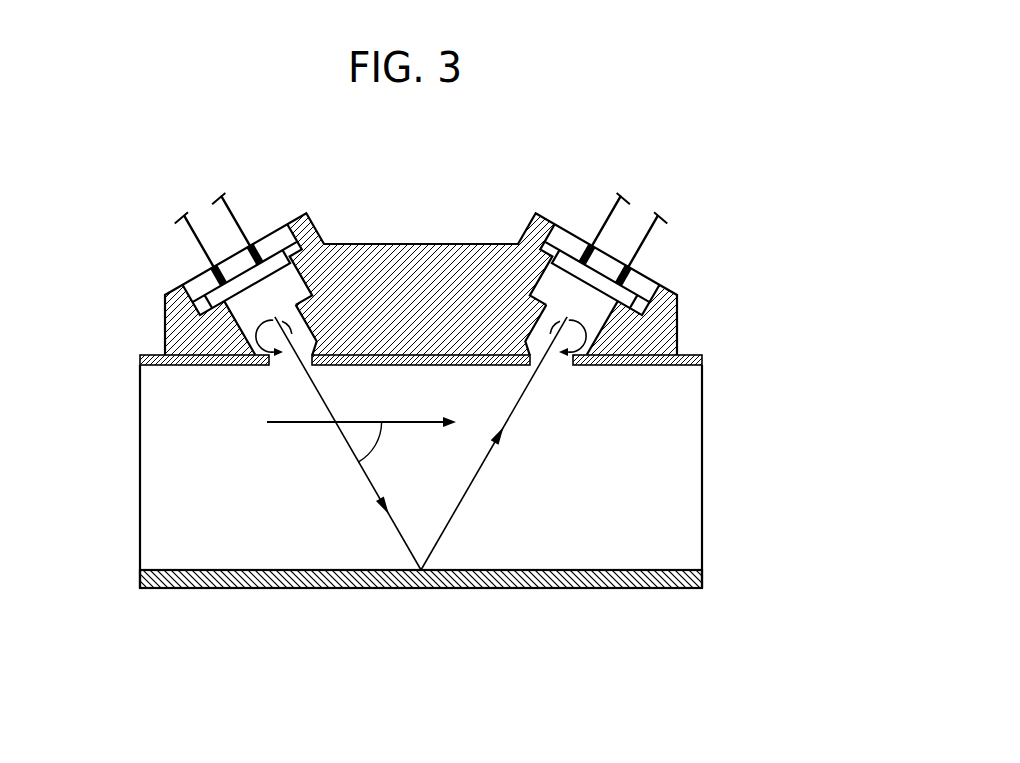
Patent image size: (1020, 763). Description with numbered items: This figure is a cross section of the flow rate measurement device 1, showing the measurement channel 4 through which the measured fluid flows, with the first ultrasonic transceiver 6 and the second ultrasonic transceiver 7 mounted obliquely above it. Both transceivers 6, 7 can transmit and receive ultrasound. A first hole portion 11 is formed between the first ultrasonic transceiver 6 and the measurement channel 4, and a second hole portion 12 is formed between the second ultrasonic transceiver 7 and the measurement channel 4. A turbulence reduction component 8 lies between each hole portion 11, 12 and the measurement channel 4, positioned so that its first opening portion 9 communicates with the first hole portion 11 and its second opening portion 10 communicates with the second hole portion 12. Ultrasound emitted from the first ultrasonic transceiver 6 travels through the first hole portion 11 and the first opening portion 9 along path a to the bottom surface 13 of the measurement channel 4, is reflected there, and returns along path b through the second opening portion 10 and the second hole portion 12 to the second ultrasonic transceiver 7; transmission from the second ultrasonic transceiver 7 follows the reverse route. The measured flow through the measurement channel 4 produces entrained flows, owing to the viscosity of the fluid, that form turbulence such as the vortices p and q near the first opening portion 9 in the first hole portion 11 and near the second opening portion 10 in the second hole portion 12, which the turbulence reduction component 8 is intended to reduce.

The flow rate measurement device 1 is at (512, 612).
The measurement channel 4 is at (252, 533).
The first ultrasonic transceiver 6 is at (210, 270).
The second ultrasonic transceiver 7 is at (633, 272).
The turbulence reduction component 8 is at (433, 353).
The first opening portion 9 is at (278, 366).
The second opening portion 10 is at (564, 366).
The first hole portion 11 is at (316, 338).
The second hole portion 12 is at (526, 338).
The bottom surface 13 is at (563, 570).
The vortex p is at (258, 342).
The vortex q is at (584, 342).
The path a is at (368, 483).
The path b is at (484, 477).